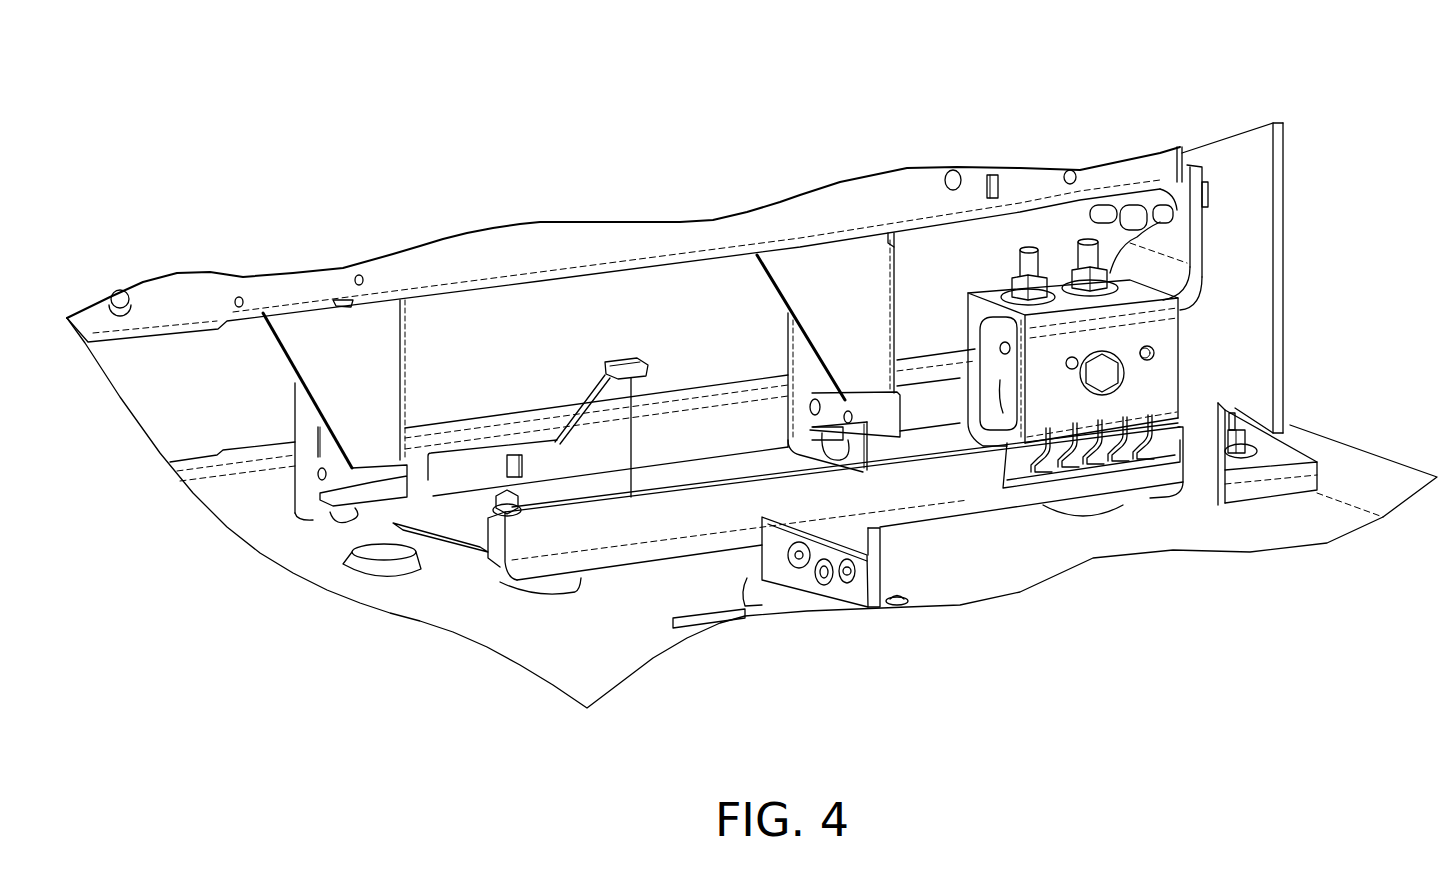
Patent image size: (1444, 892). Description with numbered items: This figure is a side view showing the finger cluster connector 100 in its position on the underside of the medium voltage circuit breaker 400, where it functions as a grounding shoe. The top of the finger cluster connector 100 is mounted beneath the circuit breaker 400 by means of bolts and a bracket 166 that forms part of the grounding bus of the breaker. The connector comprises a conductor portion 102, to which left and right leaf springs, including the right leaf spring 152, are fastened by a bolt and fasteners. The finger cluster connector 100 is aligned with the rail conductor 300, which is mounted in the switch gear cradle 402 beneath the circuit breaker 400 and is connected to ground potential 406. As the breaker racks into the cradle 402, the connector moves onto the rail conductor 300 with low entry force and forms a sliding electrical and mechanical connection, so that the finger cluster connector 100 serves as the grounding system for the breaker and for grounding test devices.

The medium voltage circuit breaker 400 is at (612, 125).
The switch gear cradle 402 is at (445, 601).
The ground potential 406 is at (1279, 488).
The bracket 166 is at (1044, 386).
The finger cluster connector 100 is at (1055, 260).
The conductor portion 102 is at (989, 433).
The right leaf spring 152 is at (1146, 388).
The rail conductor 300 is at (838, 516).